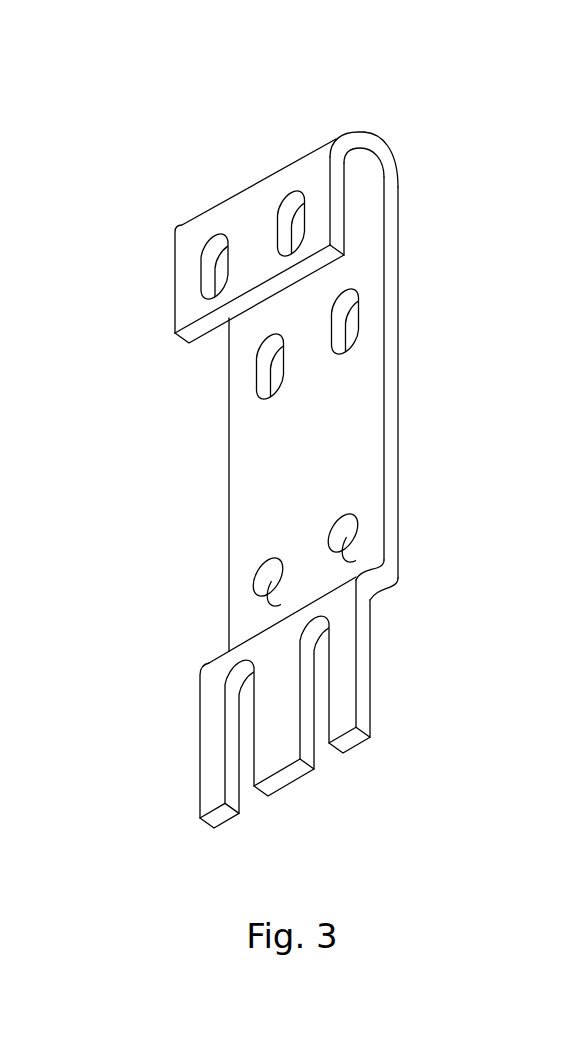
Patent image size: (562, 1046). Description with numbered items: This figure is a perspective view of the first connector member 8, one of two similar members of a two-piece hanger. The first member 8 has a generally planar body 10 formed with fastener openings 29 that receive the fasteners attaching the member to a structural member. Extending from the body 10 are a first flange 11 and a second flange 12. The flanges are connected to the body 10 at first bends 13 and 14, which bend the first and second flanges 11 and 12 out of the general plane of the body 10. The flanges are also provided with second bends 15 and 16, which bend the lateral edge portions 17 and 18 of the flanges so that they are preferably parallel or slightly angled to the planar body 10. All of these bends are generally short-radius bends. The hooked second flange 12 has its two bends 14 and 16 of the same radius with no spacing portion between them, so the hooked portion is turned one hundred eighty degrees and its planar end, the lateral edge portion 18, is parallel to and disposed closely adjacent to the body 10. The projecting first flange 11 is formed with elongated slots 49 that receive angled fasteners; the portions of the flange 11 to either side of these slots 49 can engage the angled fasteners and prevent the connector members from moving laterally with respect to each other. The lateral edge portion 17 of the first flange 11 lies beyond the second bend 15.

The first connector member 8 is at (391, 155).
The body 10 is at (400, 410).
The first flange 11 is at (370, 712).
The second flange 12 is at (350, 128).
The first bend 13 is at (392, 588).
The first bend 14 is at (372, 141).
The second bend 15 is at (367, 571).
The second bend 16 is at (344, 131).
The lateral edge portion 17 is at (351, 742).
The lateral edge portion 18 is at (196, 332).
The fastener openings 29 is at (297, 226).
The elongated slots 49 is at (327, 690).